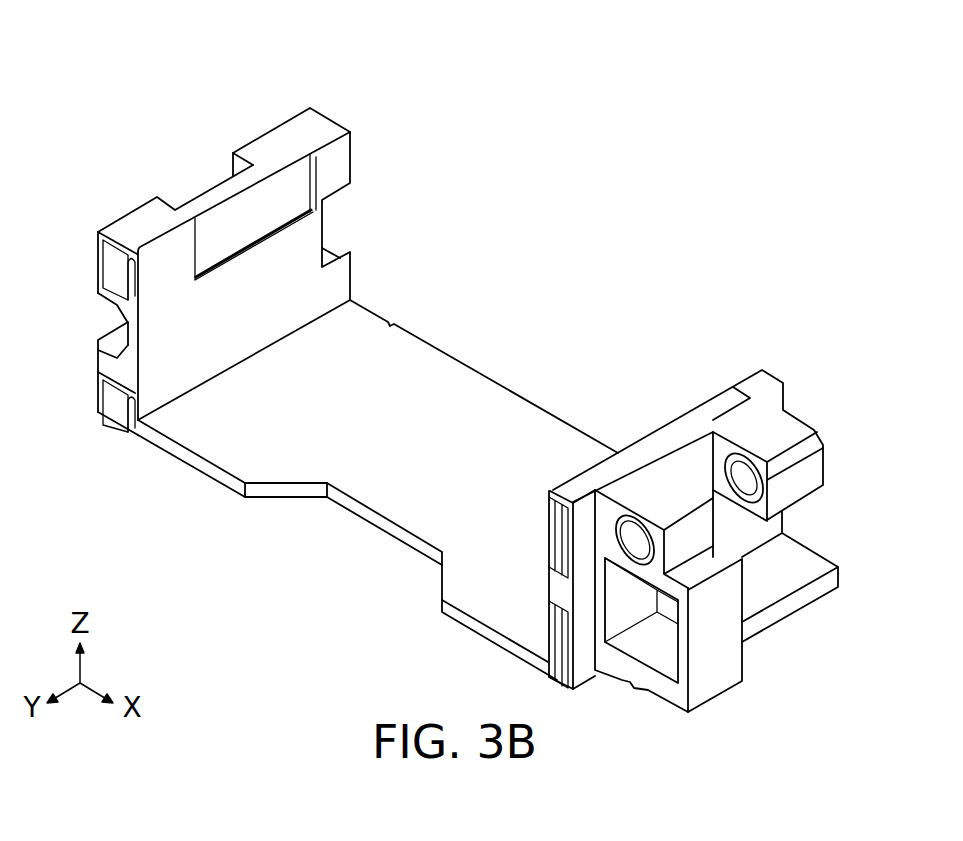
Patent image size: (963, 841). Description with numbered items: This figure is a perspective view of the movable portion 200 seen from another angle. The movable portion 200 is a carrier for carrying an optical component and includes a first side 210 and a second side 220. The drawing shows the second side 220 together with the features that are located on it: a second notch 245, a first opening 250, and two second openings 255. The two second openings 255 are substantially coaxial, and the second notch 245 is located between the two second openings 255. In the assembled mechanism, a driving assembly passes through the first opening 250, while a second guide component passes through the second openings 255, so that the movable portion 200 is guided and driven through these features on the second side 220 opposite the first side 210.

The movable portion 200 is at (492, 356).
The first side 210 is at (287, 140).
The second side 220 is at (667, 527).
The second notch 245 is at (692, 461).
The first opening 250 is at (652, 640).
The second openings 255 is at (638, 540).